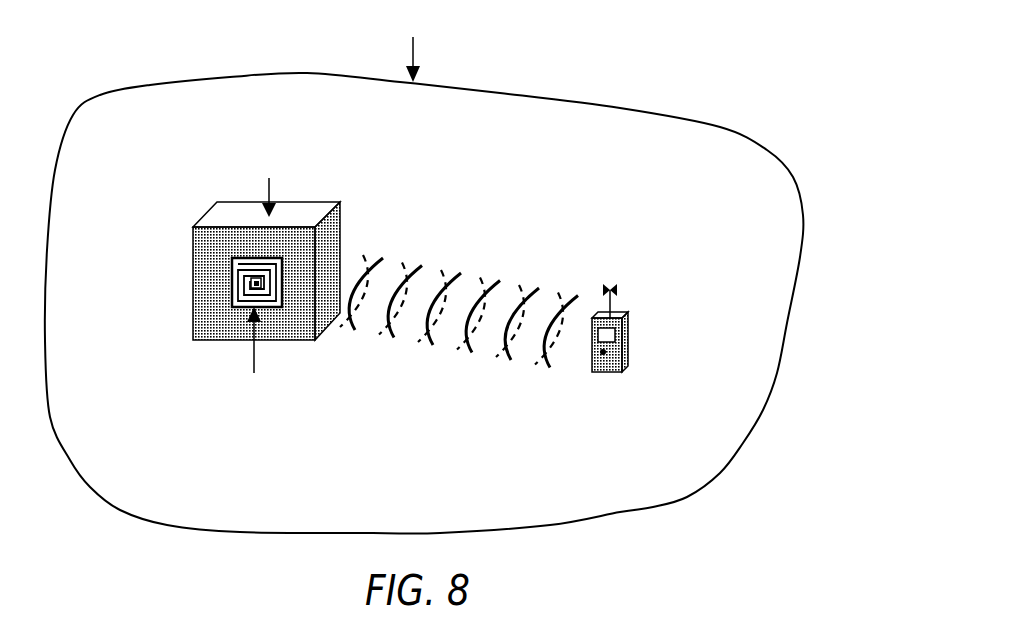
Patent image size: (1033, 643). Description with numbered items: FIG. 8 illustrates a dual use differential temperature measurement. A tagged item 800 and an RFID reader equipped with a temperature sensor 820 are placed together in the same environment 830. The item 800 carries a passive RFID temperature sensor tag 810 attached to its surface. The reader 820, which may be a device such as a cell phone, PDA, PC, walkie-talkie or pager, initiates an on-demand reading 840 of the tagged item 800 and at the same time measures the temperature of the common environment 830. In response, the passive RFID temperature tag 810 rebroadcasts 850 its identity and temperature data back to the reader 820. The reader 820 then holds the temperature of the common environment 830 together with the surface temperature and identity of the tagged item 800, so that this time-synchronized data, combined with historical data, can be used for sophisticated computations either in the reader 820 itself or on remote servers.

The tagged item 800 is at (208, 218).
The passive RFID temperature sensor tag 810 is at (233, 295).
The RFID reader with temperature sensor 820 is at (632, 357).
The environment 830 is at (592, 100).
The on-demand reading 840 is at (552, 373).
The rebroadcast 850 is at (451, 363).